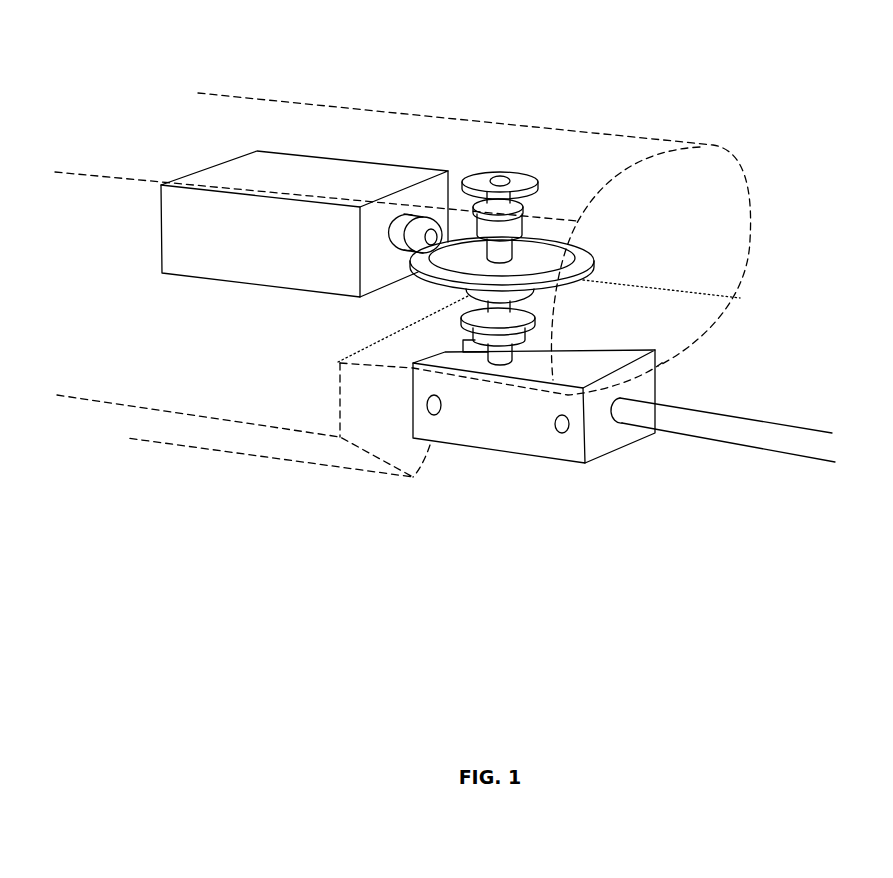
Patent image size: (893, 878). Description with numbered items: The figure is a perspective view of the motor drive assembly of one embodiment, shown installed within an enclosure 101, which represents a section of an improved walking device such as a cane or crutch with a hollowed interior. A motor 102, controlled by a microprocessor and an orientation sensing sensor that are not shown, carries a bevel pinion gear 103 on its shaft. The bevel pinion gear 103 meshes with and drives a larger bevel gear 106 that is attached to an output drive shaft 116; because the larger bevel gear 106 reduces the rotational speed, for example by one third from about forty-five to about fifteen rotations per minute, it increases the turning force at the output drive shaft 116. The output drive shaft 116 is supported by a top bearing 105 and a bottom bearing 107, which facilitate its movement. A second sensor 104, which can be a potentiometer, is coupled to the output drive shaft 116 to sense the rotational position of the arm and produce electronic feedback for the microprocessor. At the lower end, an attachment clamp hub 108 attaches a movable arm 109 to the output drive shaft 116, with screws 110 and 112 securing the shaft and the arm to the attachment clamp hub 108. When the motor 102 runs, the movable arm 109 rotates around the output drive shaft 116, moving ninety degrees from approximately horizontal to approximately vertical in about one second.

The enclosure 101 is at (209, 410).
The motor 102 is at (321, 155).
The bevel pinion gear 103 is at (431, 206).
The second sensor 104 is at (528, 160).
The top bearing 105 is at (539, 200).
The larger bevel gear 106 is at (594, 243).
The bottom bearing 107 is at (549, 306).
The attachment clamp hub 108 is at (669, 358).
The movable arm 109 is at (744, 463).
The screw 110 is at (562, 448).
The screw 112 is at (415, 417).
The output drive shaft 116 is at (489, 312).